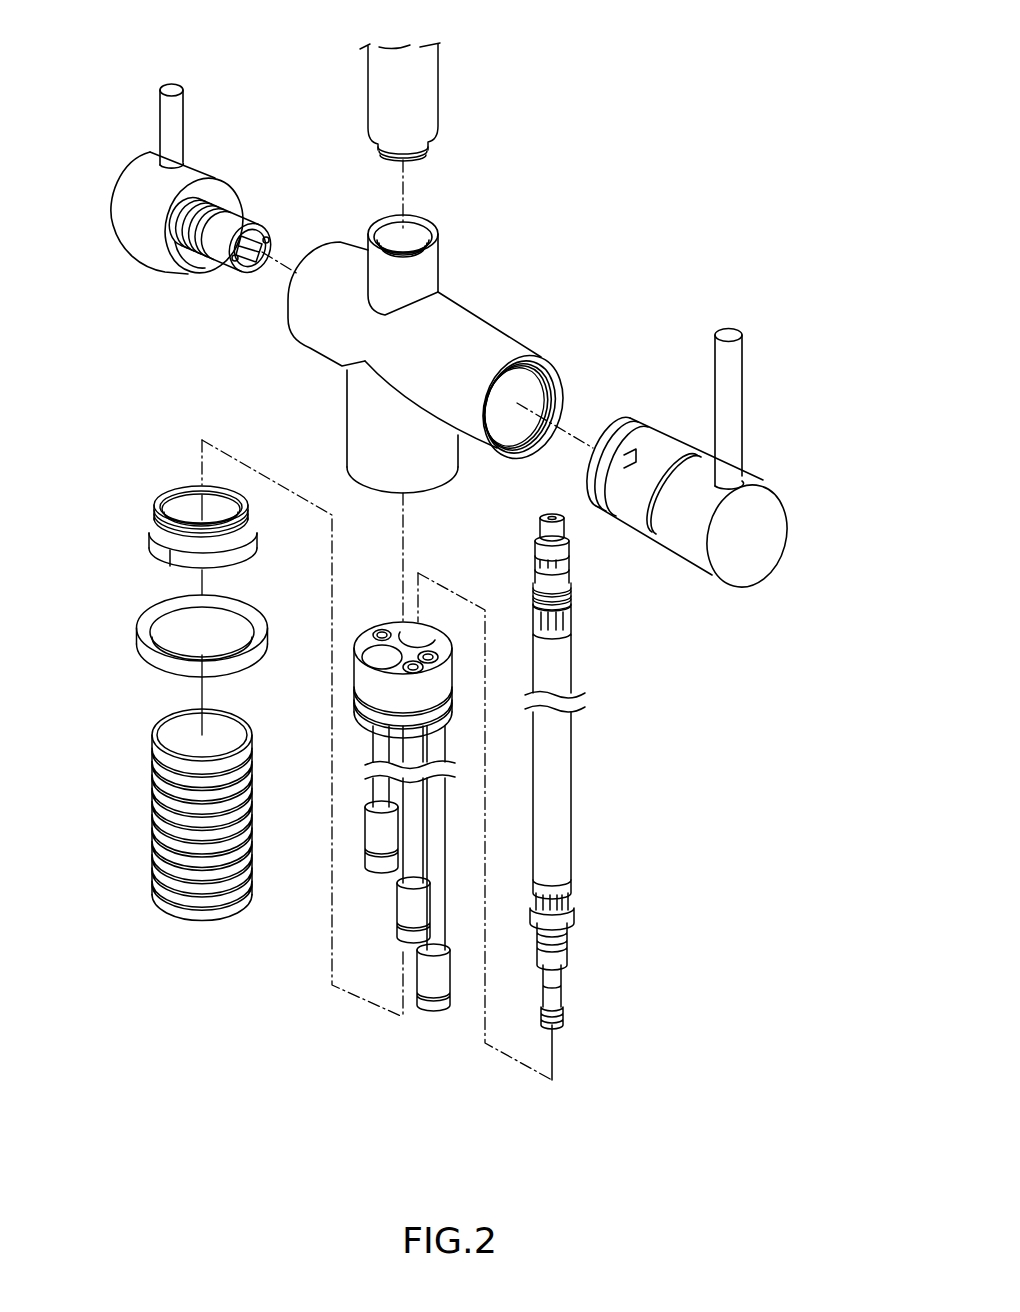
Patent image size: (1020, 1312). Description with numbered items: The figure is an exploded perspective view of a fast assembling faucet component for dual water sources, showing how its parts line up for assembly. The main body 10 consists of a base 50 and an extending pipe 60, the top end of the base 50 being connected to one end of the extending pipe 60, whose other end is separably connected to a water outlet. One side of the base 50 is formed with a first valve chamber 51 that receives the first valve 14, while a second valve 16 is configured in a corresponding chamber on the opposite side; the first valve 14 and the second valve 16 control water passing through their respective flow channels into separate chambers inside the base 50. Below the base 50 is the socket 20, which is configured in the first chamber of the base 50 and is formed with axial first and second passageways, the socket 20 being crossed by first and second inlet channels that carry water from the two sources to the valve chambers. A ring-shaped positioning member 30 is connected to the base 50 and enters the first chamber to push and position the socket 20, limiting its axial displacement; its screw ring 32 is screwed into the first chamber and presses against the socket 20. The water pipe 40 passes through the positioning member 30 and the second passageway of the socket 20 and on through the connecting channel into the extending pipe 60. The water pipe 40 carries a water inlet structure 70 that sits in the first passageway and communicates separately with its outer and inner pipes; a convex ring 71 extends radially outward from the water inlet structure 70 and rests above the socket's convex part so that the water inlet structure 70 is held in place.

The main body 10 is at (569, 143).
The first valve 14 is at (673, 432).
The second valve 16 is at (243, 204).
The socket 20 is at (382, 622).
The positioning member 30 is at (149, 543).
The screw ring 32 is at (160, 500).
The water pipe 40 is at (572, 810).
The base 50 is at (483, 320).
The first valve chamber 51 is at (533, 383).
The extending pipe 60 is at (440, 87).
The water inlet structure 70 is at (580, 594).
The convex ring 71 is at (580, 580).